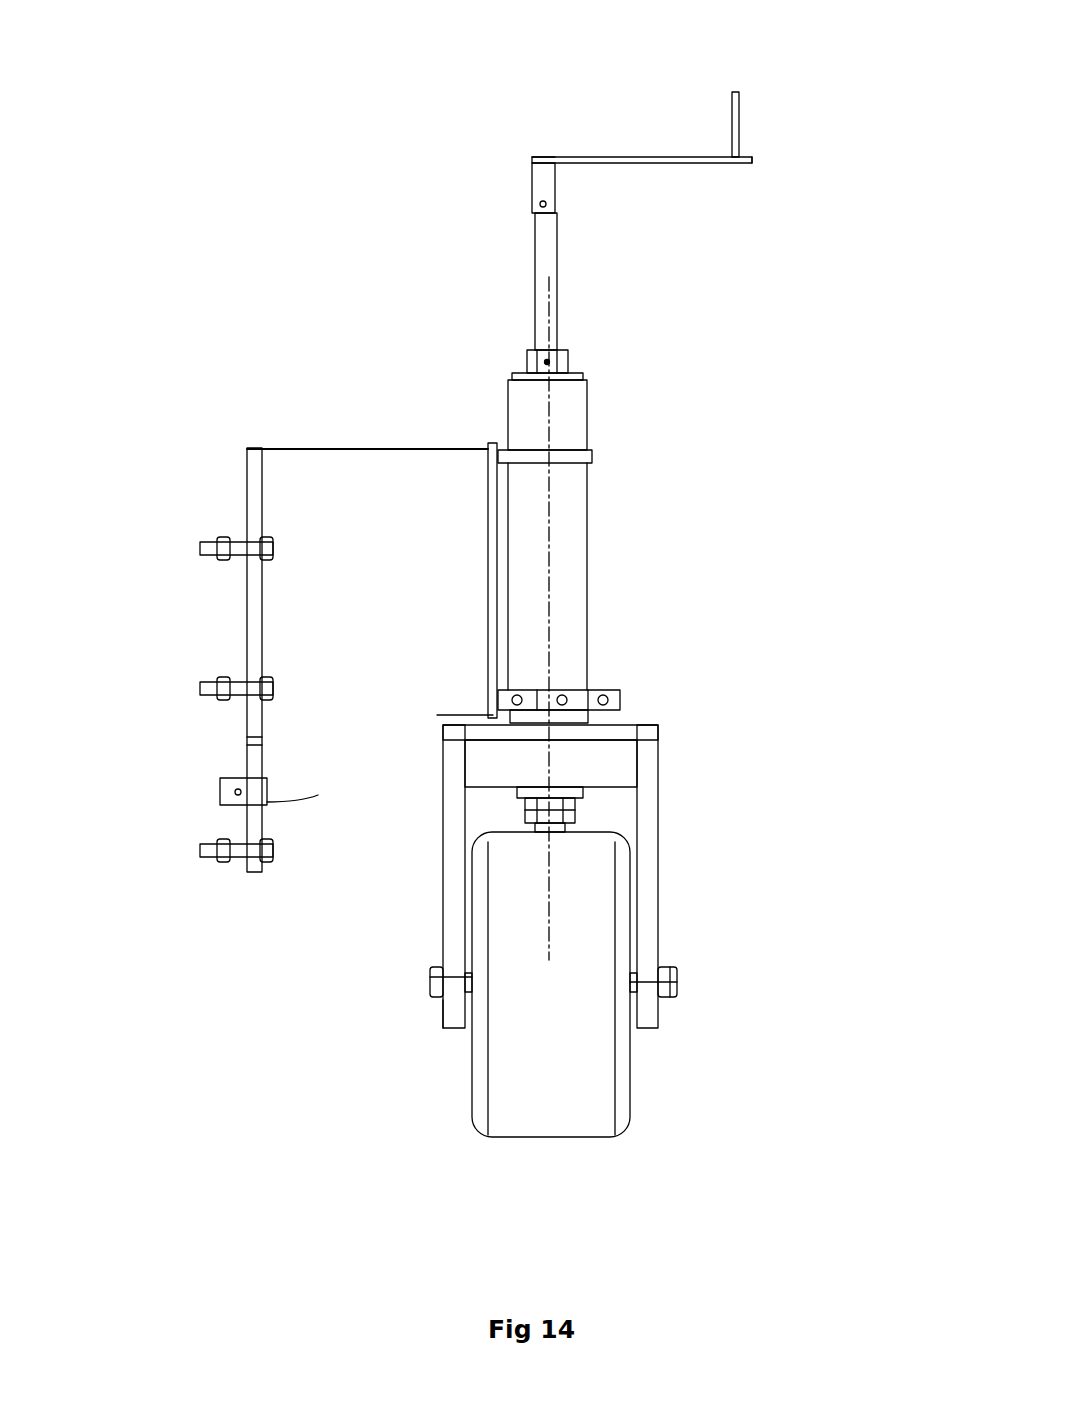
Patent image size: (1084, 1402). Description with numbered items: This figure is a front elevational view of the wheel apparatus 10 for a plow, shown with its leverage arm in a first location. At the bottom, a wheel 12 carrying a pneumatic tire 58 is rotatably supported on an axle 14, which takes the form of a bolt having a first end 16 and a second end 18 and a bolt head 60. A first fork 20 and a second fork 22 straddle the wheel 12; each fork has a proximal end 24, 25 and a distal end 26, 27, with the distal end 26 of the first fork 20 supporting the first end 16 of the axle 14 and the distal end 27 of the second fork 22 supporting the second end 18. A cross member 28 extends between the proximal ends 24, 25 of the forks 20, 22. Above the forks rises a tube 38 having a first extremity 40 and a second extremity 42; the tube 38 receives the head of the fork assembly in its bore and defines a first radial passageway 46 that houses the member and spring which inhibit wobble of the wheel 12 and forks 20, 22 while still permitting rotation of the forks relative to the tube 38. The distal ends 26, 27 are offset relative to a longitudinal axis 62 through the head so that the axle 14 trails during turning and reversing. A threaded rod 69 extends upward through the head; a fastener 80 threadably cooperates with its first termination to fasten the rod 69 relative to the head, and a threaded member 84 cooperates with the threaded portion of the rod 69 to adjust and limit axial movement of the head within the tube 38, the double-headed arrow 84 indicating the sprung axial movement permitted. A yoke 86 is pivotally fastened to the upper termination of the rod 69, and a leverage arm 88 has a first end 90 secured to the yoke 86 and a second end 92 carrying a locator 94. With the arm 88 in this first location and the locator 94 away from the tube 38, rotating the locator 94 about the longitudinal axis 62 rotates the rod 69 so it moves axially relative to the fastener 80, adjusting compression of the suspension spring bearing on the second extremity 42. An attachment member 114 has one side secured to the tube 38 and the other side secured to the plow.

The apparatus 10 is at (348, 262).
The wheel 12 is at (550, 1107).
The axle 14 is at (637, 968).
The first end 16 is at (678, 982).
The second end 18 is at (430, 985).
The first fork 20 is at (582, 812).
The second fork 22 is at (455, 902).
The proximal end 24 is at (648, 750).
The proximal end 25 is at (443, 768).
The distal end 26 is at (630, 1032).
The distal end 27 is at (457, 1032).
The cross member 28 is at (603, 765).
The tube 38 is at (540, 537).
The first extremity 40 is at (530, 665).
The second extremity 42 is at (507, 392).
The first radial passageway 46 is at (563, 688).
The pneumatic tire 58 is at (662, 968).
The bolt head 60 is at (430, 976).
The longitudinal axis 62 is at (550, 420).
The threaded rod 69 is at (548, 252).
The fastener 80 is at (530, 818).
The threaded member 84 is at (532, 352).
The yoke 86 is at (541, 173).
The leverage arm 88 is at (640, 157).
The first end 90 is at (541, 157).
The second end 92 is at (727, 163).
The locator 94 is at (731, 110).
The attachment member 114 is at (280, 613).